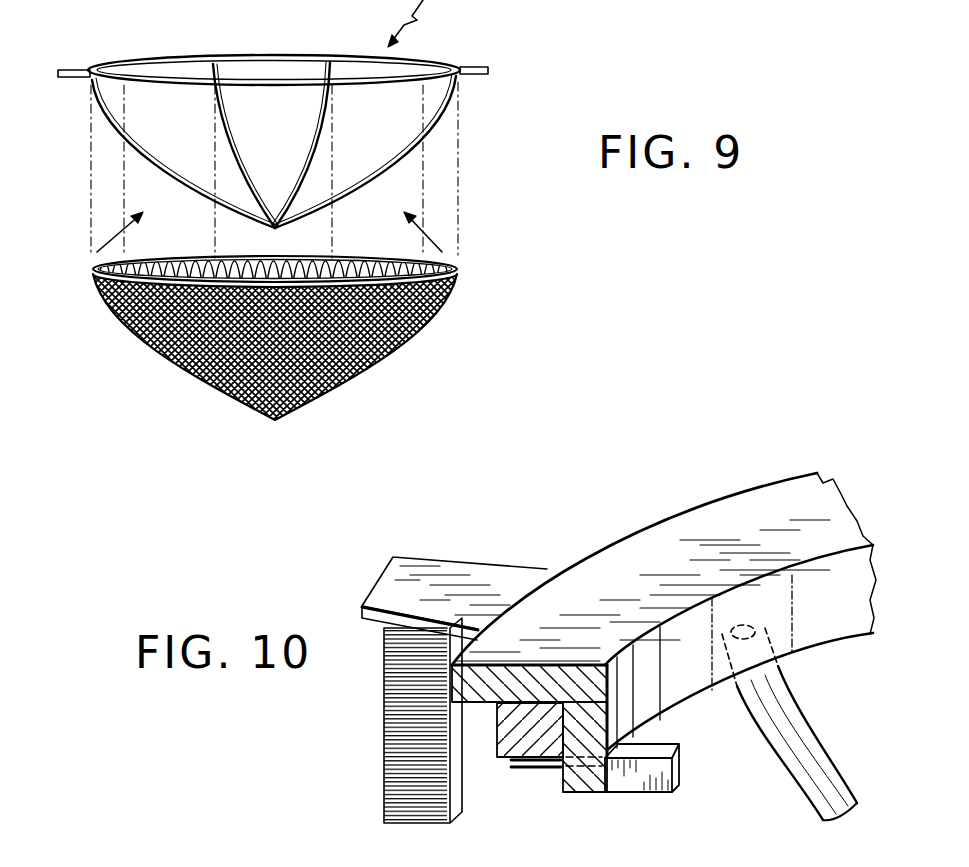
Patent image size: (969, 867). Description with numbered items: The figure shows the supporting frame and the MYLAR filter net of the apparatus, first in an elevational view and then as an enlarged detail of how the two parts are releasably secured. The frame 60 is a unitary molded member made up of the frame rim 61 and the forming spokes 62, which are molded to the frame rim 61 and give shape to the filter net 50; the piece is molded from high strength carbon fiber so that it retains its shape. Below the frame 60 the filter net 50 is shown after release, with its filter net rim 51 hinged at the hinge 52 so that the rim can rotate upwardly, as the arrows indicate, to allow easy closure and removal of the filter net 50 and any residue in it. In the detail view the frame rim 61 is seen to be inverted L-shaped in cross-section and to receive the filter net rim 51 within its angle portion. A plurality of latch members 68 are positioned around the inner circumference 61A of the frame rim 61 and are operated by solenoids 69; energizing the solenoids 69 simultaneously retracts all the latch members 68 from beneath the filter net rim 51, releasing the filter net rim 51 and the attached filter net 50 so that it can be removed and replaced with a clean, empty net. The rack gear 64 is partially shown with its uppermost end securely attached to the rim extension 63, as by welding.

In FIG. 9, the filter net 50 is at (325, 315).
In FIG. 9, the filter net rim 51 is at (442, 264).
In FIG. 10, the filter net rim 51 is at (507, 744).
In FIG. 9, the hinge 52 is at (342, 254).
In FIG. 10, the frame 60 is at (748, 472).
In FIG. 9, the frame rim 61 is at (284, 55).
In FIG. 10, the frame rim 61 is at (826, 511).
In FIG. 10, the inner circumference of frame rim 61A is at (833, 622).
In FIG. 9, the forming spokes 62 is at (180, 162).
In FIG. 10, the forming spokes 62 is at (812, 766).
In FIG. 9, the rim extension 63 is at (80, 66).
In FIG. 10, the rim extension 63 is at (462, 568).
In FIG. 10, the rack gear 64 is at (388, 757).
In FIG. 10, the latch members 68 is at (543, 771).
In FIG. 10, the solenoids 69 is at (680, 762).